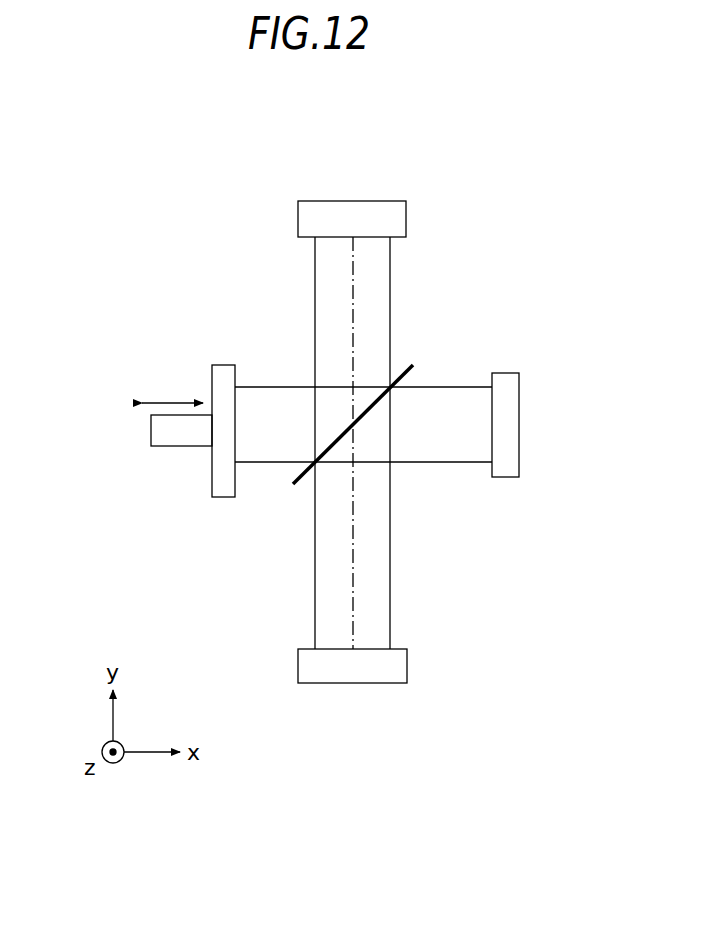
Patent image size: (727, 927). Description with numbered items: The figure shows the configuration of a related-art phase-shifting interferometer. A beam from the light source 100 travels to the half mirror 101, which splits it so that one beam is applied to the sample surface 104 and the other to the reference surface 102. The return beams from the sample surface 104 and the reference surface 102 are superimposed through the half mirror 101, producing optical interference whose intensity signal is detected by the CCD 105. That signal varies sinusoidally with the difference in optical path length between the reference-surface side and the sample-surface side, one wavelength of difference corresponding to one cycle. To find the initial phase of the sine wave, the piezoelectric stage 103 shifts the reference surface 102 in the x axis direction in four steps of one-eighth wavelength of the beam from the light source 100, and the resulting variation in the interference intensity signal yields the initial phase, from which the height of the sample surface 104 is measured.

The light source 100 is at (396, 218).
The half mirror 101 is at (413, 365).
The reference surface 102 is at (224, 365).
The piezoelectric stage 103 is at (172, 433).
The sample surface 104 is at (397, 665).
The CCD 105 is at (505, 478).